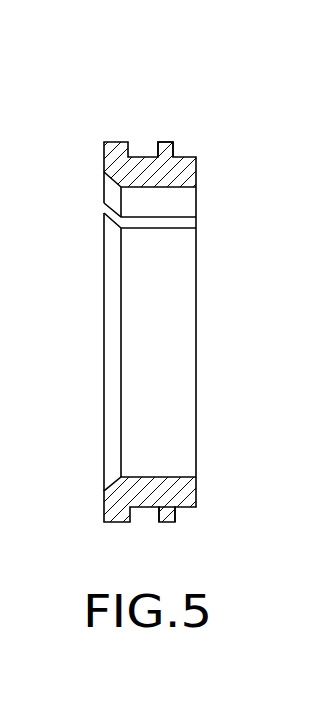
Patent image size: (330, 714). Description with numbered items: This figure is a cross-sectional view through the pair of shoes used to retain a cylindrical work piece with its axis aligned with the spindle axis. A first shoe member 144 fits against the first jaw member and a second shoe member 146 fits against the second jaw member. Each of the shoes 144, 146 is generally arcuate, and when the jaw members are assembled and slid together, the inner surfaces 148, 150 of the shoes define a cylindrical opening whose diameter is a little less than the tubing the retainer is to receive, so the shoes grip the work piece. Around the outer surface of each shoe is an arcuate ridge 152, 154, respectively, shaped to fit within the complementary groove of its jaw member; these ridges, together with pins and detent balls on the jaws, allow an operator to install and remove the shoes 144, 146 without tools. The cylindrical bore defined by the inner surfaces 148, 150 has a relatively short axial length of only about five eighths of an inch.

The first shoe member 144 is at (103, 465).
The second shoe member 146 is at (195, 156).
The inner surface 148 is at (158, 473).
The inner surface 150 is at (191, 192).
The arcuate ridge 152 is at (218, 532).
The arcuate ridge 154 is at (168, 143).